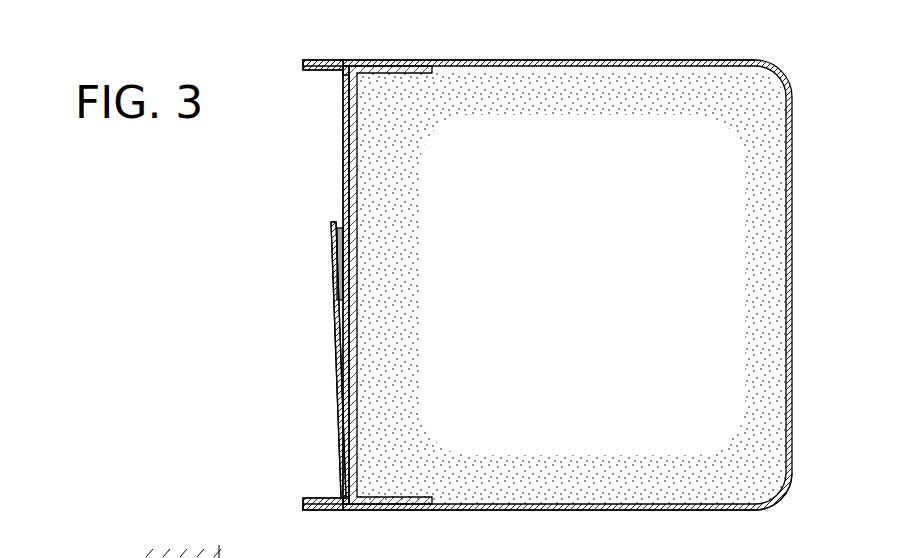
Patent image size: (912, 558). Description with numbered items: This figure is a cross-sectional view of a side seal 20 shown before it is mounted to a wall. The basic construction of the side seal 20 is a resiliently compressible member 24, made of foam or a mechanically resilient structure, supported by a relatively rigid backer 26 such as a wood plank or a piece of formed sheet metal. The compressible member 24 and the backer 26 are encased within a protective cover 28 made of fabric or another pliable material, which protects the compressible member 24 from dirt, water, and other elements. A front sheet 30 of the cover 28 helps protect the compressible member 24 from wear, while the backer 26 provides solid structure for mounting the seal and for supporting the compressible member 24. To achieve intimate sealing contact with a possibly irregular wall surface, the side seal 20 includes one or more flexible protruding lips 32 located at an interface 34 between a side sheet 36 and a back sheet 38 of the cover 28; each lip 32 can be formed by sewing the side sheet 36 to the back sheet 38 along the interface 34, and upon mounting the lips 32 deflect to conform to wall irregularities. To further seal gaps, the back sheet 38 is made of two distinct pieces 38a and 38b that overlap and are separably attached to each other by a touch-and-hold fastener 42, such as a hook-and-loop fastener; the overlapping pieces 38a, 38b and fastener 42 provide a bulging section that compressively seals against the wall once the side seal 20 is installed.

The side seal 20 is at (125, 245).
The resiliently compressible member 24 is at (703, 350).
The backer 26 is at (357, 152).
The protective cover 28 is at (333, 312).
The front sheet 30 is at (795, 425).
The flexible protruding lip 32 is at (322, 60).
The interface 34 is at (346, 53).
The side sheet 36 is at (565, 60).
The back sheet 38 is at (343, 130).
The back sheet piece 38a is at (334, 342).
The back sheet piece 38b is at (343, 180).
The touch-and-hold fastener 42 is at (340, 226).